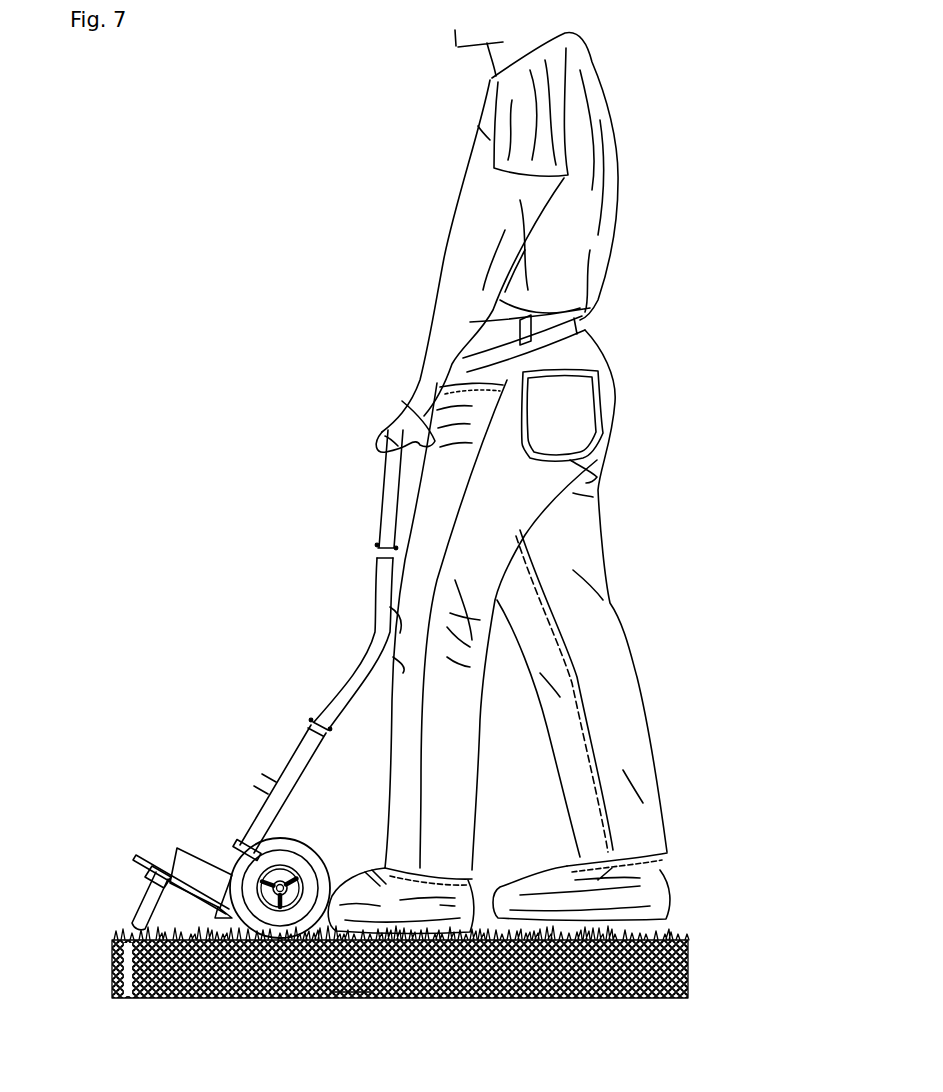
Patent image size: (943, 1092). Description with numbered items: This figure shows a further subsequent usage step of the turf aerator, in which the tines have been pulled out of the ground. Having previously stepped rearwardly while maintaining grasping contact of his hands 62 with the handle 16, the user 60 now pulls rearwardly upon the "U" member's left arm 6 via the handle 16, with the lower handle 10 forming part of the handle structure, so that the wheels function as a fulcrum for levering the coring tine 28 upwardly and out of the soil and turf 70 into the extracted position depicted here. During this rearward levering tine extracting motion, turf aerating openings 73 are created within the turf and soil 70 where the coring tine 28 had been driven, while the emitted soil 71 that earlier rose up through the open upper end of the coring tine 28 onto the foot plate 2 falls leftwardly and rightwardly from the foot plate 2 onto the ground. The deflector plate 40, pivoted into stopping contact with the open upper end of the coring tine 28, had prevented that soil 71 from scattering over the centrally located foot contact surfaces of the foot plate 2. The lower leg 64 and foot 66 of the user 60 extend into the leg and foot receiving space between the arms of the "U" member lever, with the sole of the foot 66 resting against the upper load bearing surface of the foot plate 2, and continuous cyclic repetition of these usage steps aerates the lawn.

The foot plate 2 is at (140, 860).
The left arm 6 is at (278, 778).
The lower handle 10 is at (362, 640).
The handle 16 is at (392, 500).
The coring tine 28 is at (150, 900).
The deflector plate 40 is at (193, 867).
The user 60 is at (482, 130).
The hands 62 is at (382, 400).
The lower leg 64 is at (397, 793).
The foot 66 is at (447, 900).
The soil and turf 70 is at (348, 993).
The soil 71 is at (208, 940).
The turf aerating openings 73 is at (130, 975).